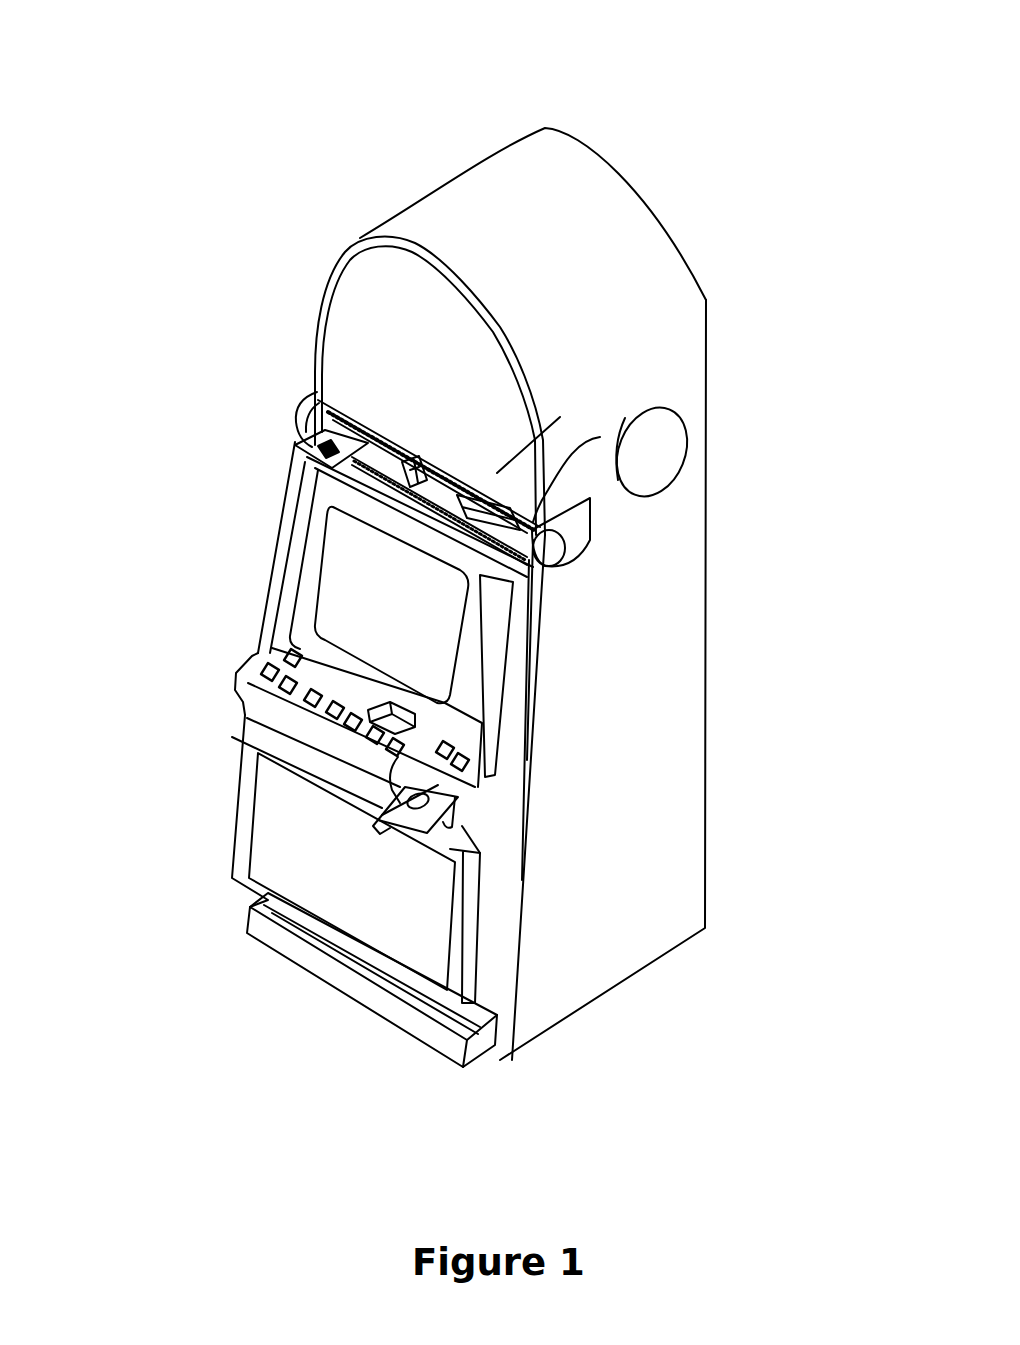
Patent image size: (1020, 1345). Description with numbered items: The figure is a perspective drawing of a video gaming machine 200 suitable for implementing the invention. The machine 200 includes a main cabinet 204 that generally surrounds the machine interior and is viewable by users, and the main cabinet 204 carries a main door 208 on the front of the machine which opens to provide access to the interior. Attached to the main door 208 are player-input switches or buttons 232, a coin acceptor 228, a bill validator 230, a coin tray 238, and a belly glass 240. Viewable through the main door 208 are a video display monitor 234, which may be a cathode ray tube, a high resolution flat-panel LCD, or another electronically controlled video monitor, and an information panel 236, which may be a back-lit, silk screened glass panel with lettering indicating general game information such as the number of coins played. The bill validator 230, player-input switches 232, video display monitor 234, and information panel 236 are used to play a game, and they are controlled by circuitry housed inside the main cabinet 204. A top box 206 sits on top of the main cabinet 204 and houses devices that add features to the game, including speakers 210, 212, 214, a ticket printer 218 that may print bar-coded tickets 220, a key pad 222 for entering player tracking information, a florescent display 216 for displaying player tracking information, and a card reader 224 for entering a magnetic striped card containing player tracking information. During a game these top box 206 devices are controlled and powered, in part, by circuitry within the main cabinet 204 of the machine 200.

The video gaming machine 200 is at (716, 113).
The main cabinet 204 is at (634, 768).
The top box 206 is at (601, 308).
The main door 208 is at (488, 948).
The speaker 210 is at (650, 452).
The speaker 212 is at (560, 544).
The speaker 214 is at (307, 387).
The florescent display 216 is at (600, 437).
The ticket printer 218 is at (318, 436).
The bar-coded tickets 220 is at (298, 455).
The key pad 222 is at (318, 402).
The card reader 224 is at (536, 557).
The coin acceptor 228 is at (488, 742).
The bill validator 230 is at (460, 823).
The player-input switches 232 is at (328, 708).
The video display monitor 234 is at (333, 576).
The information panel 236 is at (490, 625).
The coin tray 238 is at (477, 1047).
The belly glass 240 is at (285, 843).